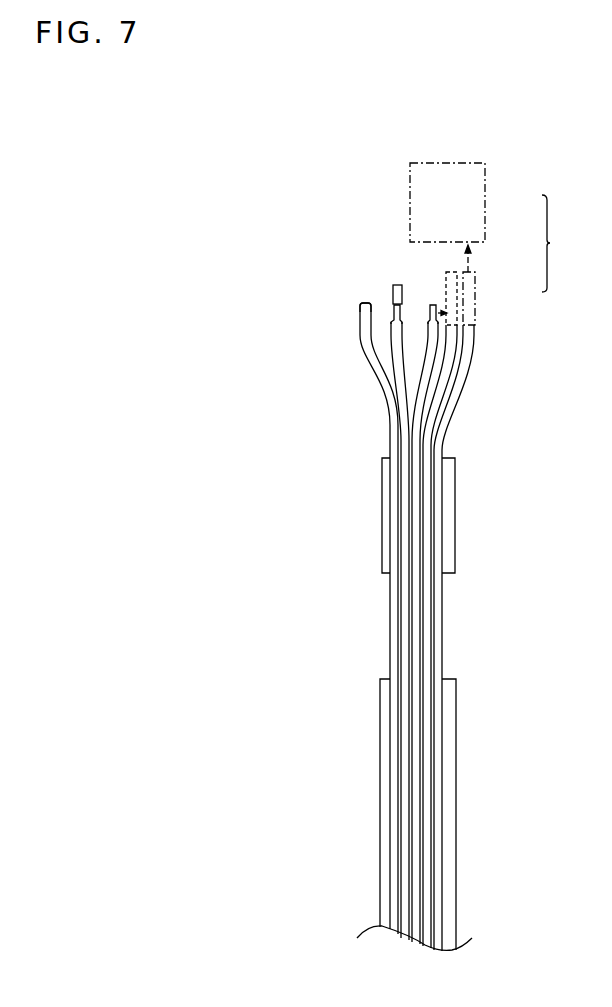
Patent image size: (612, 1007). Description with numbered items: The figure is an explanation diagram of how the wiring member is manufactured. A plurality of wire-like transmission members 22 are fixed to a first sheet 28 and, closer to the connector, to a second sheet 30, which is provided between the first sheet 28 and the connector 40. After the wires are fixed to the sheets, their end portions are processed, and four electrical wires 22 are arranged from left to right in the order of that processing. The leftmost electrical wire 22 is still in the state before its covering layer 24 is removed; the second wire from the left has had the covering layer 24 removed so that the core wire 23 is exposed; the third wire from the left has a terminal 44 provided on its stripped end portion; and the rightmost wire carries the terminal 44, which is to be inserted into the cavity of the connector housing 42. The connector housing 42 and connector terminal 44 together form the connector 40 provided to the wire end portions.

The wire-like transmission member 22 is at (456, 396).
The core wire 23 is at (393, 312).
The covering layer 24 is at (396, 285).
The first sheet 28 is at (452, 786).
The second sheet 30 is at (455, 522).
The connector 40 is at (561, 243).
The connector housing 42 is at (487, 208).
The connector terminal 44 is at (448, 296).